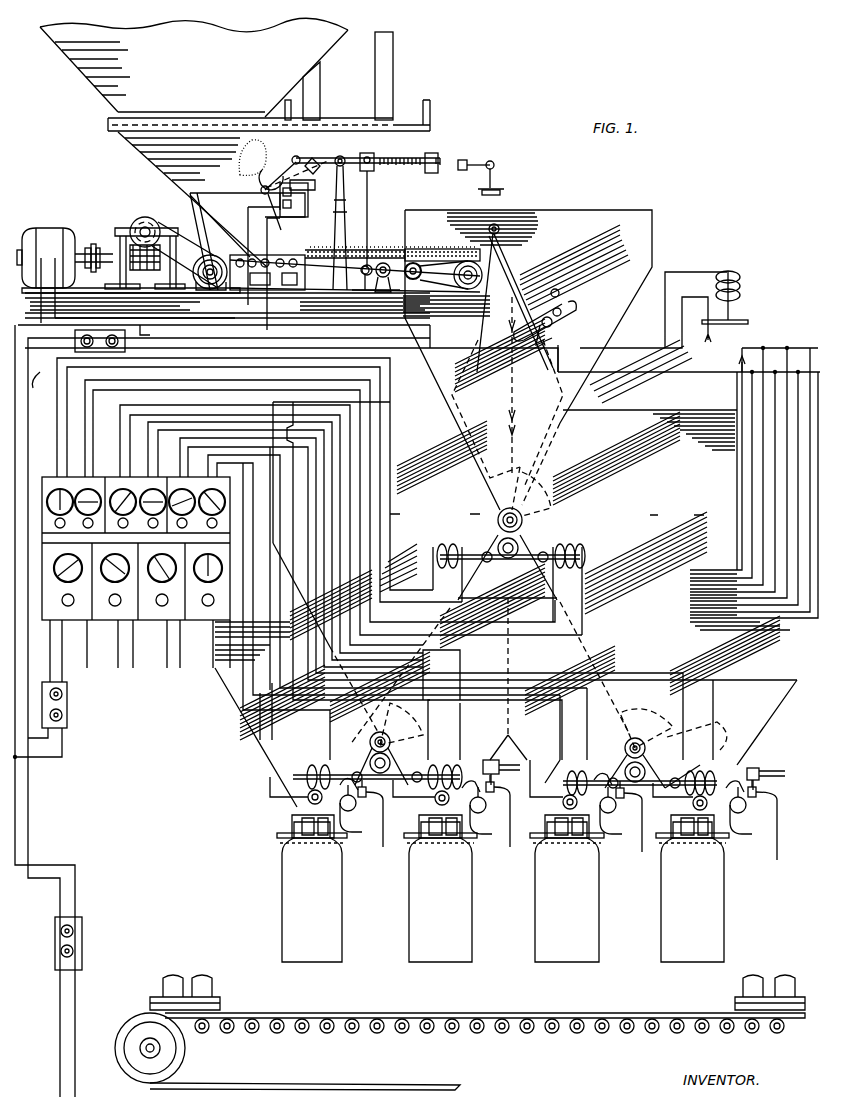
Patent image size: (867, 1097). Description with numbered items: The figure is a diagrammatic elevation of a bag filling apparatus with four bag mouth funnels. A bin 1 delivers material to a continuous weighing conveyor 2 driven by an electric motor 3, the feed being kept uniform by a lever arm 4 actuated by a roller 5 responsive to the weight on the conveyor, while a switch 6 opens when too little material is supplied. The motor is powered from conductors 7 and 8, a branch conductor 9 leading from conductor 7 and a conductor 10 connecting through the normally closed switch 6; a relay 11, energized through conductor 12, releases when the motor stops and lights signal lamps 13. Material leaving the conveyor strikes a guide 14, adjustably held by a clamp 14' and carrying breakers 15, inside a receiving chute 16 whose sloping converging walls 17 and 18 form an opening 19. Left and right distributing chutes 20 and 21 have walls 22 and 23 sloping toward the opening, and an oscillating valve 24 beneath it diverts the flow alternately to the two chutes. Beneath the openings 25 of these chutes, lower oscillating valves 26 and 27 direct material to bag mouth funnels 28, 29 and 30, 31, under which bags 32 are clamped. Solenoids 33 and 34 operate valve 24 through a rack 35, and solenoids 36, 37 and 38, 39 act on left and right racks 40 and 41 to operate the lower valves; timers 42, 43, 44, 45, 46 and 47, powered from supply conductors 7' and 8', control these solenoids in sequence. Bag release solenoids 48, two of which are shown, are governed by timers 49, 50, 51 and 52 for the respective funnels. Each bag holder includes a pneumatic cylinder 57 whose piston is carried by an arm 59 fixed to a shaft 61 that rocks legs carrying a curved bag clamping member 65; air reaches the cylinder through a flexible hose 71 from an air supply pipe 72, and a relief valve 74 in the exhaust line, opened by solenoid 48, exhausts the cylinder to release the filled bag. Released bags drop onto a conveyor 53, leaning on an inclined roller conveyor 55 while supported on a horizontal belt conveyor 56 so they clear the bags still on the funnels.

The bin 1 is at (235, 142).
The continuous weighing conveyor 2 is at (430, 256).
The electric motor 3 is at (60, 230).
The lever arm 4 is at (406, 162).
The roller 5 is at (400, 260).
The switch 6 is at (300, 188).
The supply conductor 7 is at (371, 684).
The supply conductor 7' is at (74, 678).
The supply conductor 8 is at (426, 604).
The supply conductor 8' is at (76, 686).
The branch conductor 9 is at (138, 332).
The conductor 10 is at (57, 262).
The relay 11 is at (740, 293).
The conductor 12 is at (660, 333).
The signal lamps 13 is at (308, 805).
The guide 14 is at (522, 354).
The clamp 14' is at (563, 311).
The breakers 15 is at (520, 260).
The receiving chute 16 is at (640, 250).
The sloping converging wall 17 is at (486, 409).
The sloping converging wall 18 is at (542, 412).
The opening 19 is at (517, 483).
The left distributing chute 20 is at (435, 514).
The right distributing chute 21 is at (677, 515).
The wall 22 is at (410, 655).
The wall 23 is at (612, 655).
The oscillating valve 24 is at (552, 490).
The openings 25 is at (508, 722).
The lower oscillating valve 26 is at (441, 683).
The lower oscillating valve 27 is at (705, 722).
The bag mouth funnel 28 is at (258, 738).
The bag mouth funnel 29 is at (495, 758).
The bag mouth funnel 30 is at (540, 772).
The bag mouth funnel 31 is at (660, 775).
The bags 32 is at (344, 896).
The solenoid 33 is at (446, 545).
The solenoid 34 is at (572, 544).
The rack 35 is at (530, 560).
The solenoid 36 is at (312, 765).
The solenoid 37 is at (448, 765).
The solenoid 38 is at (575, 768).
The solenoid 39 is at (702, 770).
The left rack 40 is at (398, 768).
The right rack 41 is at (640, 763).
The timer 42 is at (55, 490).
The timer 43 is at (85, 490).
The timer 44 is at (119, 490).
The timer 45 is at (150, 490).
The timer 46 is at (178, 490).
The timer 47 is at (208, 490).
The bag release solenoid 48 is at (508, 736).
The timer 49 is at (70, 582).
The timer 50 is at (108, 580).
The timer 51 is at (156, 580).
The timer 52 is at (202, 580).
The conveyor 53 is at (528, 1012).
The inclined roller conveyor 55 is at (210, 976).
The horizontal belt conveyor 56 is at (392, 1012).
The pneumatic cylinder 57 is at (788, 816).
The arm 59 is at (352, 812).
The shaft 61 is at (290, 825).
The bag clamping member 65 is at (280, 842).
The flexible hose 71 is at (348, 778).
The air supply pipe 72 is at (385, 850).
The relief valve 74 is at (764, 790).